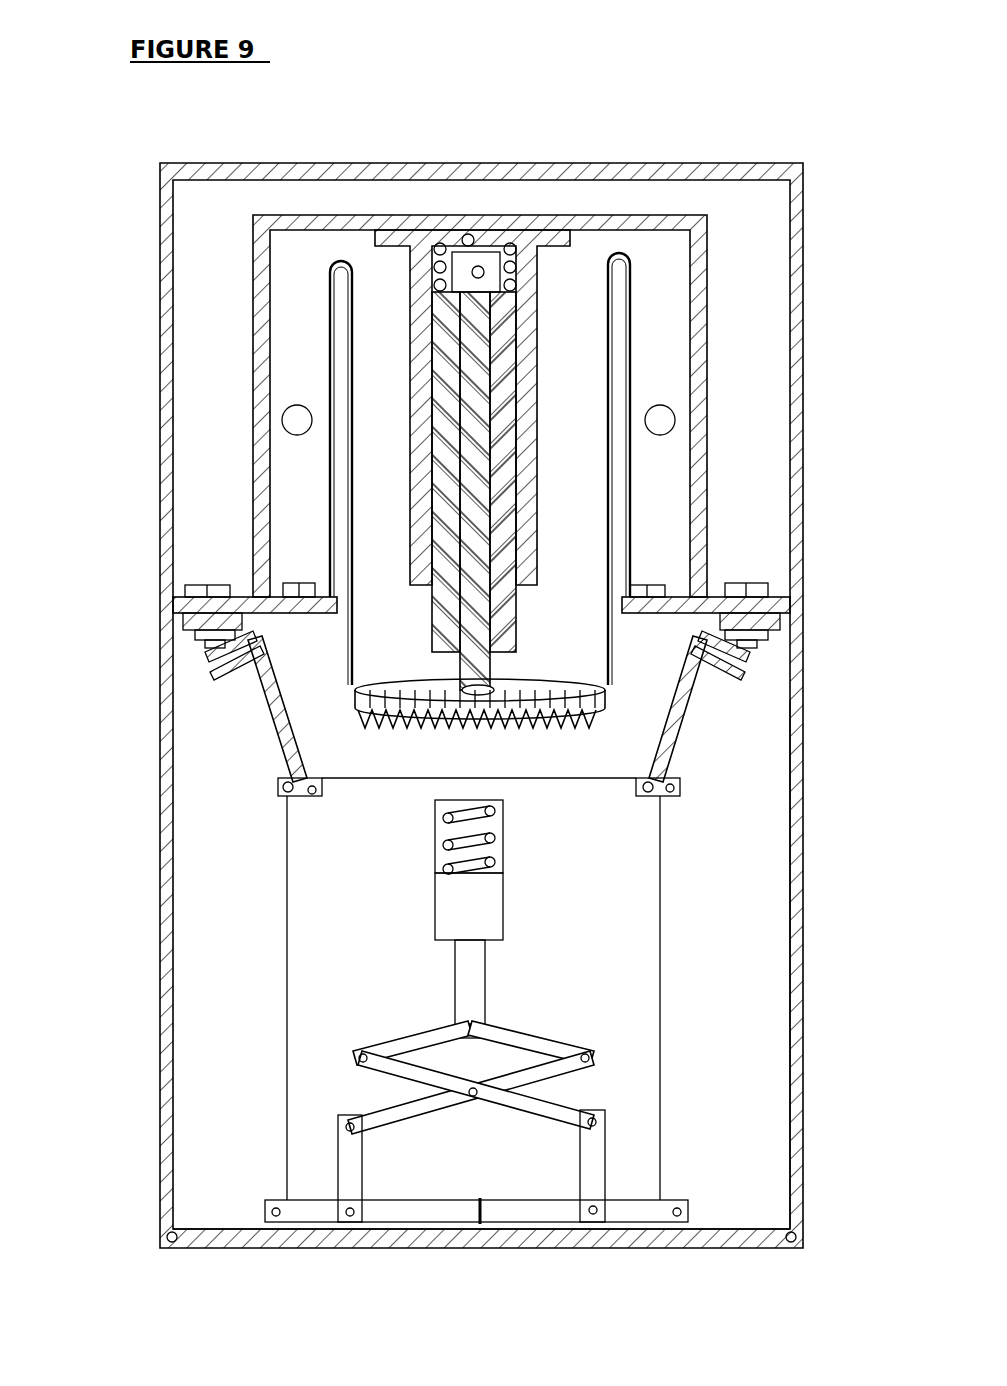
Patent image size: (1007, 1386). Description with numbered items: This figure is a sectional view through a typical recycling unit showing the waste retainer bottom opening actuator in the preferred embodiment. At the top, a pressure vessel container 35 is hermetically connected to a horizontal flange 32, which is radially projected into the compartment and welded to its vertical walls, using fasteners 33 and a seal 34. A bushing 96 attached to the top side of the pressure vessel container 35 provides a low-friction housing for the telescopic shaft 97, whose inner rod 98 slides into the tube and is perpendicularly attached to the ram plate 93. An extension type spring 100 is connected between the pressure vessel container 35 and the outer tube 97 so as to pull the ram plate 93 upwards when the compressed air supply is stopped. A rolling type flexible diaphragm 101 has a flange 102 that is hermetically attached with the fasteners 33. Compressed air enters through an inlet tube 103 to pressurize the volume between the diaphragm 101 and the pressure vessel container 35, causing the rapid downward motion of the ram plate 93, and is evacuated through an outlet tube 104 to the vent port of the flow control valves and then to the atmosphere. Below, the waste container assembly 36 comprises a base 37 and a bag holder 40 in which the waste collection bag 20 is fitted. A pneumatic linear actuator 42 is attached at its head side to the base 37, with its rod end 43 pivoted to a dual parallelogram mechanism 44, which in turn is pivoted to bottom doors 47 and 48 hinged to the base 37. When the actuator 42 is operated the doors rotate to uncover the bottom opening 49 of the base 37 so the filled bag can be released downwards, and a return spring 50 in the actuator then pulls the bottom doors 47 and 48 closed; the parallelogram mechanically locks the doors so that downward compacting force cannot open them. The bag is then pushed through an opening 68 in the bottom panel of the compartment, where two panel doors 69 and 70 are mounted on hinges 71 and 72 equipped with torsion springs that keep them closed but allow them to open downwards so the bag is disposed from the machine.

The waste collection bag 20 is at (505, 705).
The bag holder 40 is at (819, 964).
The pressure vessel container 35 is at (253, 310).
The inlet tube 103 is at (290, 421).
The outlet tube 104 is at (668, 425).
The rolling type flexible diaphragm 101 is at (325, 540).
The horizontal flange 32 is at (200, 618).
The fasteners 33 is at (208, 645).
The seal 34 is at (778, 630).
The ram plate 93 is at (200, 590).
The bushing 96 is at (415, 240).
The telescopic shaft 97 is at (440, 525).
The inner rod 98 is at (480, 535).
The extension type spring 100 is at (478, 520).
The flange 102 is at (258, 650).
The waste container assembly 36 is at (300, 972).
The base 37 is at (300, 1096).
The return spring 50 is at (446, 846).
The pneumatic linear actuator 42 is at (487, 910).
The dual parallelogram mechanism 44 is at (475, 976).
The rod end 43 is at (535, 1075).
The bottom door 47 is at (392, 1212).
The bottom door 48 is at (538, 1215).
The bottom opening 49 is at (481, 1230).
The panel door 69 is at (340, 1240).
The panel door 70 is at (604, 1240).
The opening 68 is at (470, 1240).
The hinge 71 is at (163, 1242).
The hinge 72 is at (760, 1243).